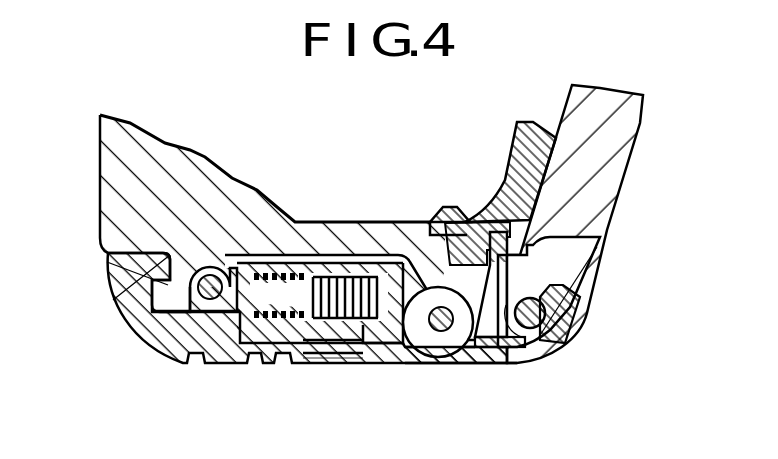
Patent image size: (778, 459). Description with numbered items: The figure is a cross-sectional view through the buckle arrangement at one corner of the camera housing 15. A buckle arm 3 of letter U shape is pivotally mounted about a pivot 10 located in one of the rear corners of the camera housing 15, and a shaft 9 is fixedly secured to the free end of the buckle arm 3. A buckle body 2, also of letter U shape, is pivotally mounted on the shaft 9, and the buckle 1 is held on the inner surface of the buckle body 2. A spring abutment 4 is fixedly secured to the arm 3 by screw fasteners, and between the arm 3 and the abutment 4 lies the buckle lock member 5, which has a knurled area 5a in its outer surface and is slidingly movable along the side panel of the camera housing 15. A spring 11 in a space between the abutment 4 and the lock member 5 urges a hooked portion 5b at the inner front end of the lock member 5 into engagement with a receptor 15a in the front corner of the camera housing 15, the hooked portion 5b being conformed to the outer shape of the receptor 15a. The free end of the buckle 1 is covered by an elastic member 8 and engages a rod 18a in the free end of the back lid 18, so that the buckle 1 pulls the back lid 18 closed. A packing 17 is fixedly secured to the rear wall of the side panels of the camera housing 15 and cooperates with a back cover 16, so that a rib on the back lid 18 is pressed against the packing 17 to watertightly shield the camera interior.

The buckle 1 is at (558, 345).
The buckle body 2 is at (487, 360).
The buckle arm 3 is at (393, 356).
The spring abutment 4 is at (328, 262).
The buckle lock member 5 is at (168, 364).
The knurled area 5a is at (263, 355).
The hooked portion 5b is at (107, 268).
The elastic member 8 is at (580, 322).
The shaft 9 is at (212, 255).
The pivot 10 is at (438, 333).
The spring 11 is at (303, 305).
The camera housing 15 is at (108, 160).
The receptor 15a is at (165, 300).
The back cover 16 is at (510, 187).
The packing 17 is at (472, 237).
The back lid 18 is at (618, 193).
The rod 18a is at (525, 345).